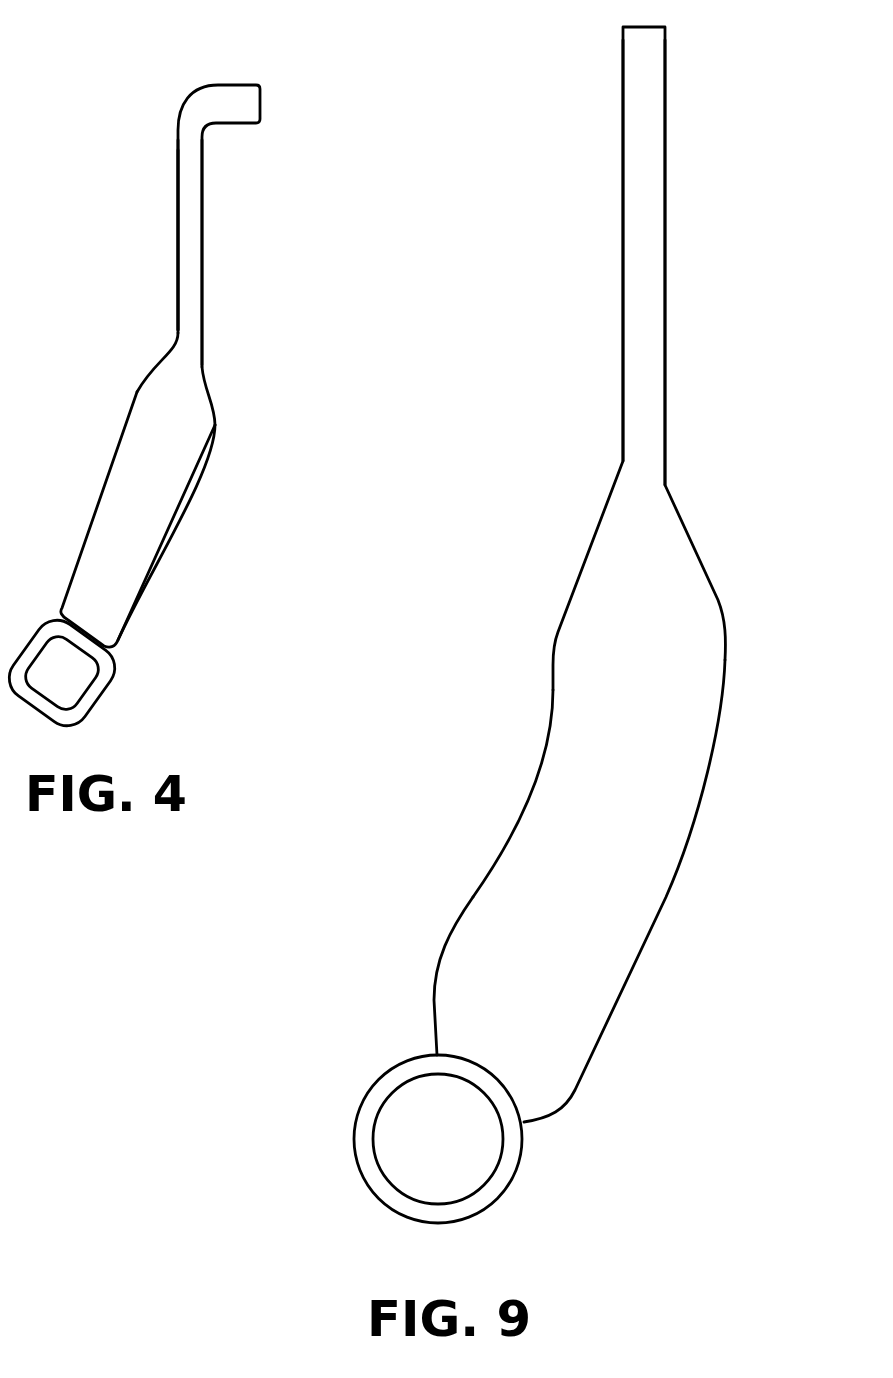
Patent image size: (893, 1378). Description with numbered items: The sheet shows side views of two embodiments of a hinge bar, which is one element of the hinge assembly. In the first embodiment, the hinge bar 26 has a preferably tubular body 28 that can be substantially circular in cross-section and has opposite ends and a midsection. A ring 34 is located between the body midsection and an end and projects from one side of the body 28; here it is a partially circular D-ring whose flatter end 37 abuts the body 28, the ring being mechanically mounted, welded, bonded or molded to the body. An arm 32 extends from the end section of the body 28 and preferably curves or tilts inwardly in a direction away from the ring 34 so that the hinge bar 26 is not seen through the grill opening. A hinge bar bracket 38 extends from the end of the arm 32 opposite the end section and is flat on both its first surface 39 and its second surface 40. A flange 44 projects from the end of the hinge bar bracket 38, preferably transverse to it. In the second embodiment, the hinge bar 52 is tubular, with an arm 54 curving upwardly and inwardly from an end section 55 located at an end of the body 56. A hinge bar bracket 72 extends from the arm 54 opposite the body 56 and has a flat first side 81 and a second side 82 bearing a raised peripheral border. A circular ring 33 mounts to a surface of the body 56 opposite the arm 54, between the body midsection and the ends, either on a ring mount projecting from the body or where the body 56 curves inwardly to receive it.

In FIG. 4, the hinge bar 26 is at (130, 500).
In FIG. 4, the body 28 is at (133, 580).
In FIG. 4, the arm 32 is at (178, 360).
In FIG. 9, the ring 33 is at (483, 1199).
In FIG. 4, the ring 34 is at (80, 708).
In FIG. 4, the flatter end 37 is at (80, 640).
In FIG. 4, the hinge bar bracket 38 is at (190, 193).
In FIG. 4, the first surface 39 is at (178, 225).
In FIG. 4, the second surface 40 is at (202, 262).
In FIG. 4, the flange 44 is at (237, 90).
In FIG. 9, the hinge bar 52 is at (684, 754).
In FIG. 9, the arm 54 is at (612, 556).
In FIG. 9, the end section 55 is at (548, 719).
In FIG. 9, the body 56 is at (514, 867).
In FIG. 9, the hinge bar bracket 72 is at (633, 163).
In FIG. 9, the first side 81 is at (623, 267).
In FIG. 9, the second side 82 is at (666, 289).